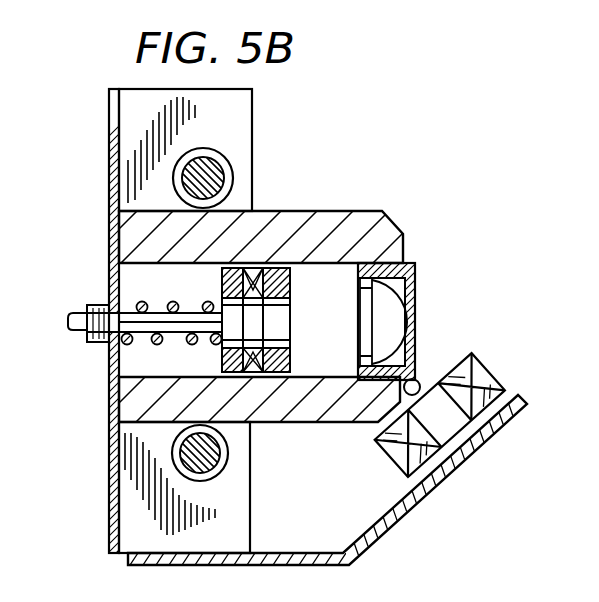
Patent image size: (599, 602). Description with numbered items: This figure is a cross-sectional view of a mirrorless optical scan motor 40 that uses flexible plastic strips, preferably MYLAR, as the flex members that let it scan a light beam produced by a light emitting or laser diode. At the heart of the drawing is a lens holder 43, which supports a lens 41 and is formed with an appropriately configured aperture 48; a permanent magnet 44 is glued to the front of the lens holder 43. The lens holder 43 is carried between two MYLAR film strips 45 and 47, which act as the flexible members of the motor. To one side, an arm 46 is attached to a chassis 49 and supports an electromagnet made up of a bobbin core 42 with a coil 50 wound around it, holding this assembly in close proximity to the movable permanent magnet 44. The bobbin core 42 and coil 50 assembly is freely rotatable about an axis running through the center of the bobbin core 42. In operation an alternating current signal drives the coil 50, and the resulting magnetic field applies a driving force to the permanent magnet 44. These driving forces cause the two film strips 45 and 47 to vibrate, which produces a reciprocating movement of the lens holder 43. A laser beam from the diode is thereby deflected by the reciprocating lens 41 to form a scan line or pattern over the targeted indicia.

The optical scan motor 40 is at (291, 140).
The lens 41 is at (422, 275).
The bobbin core 42 is at (455, 403).
The lens holder 43 is at (412, 268).
The permanent magnet 44 is at (422, 376).
The MYLAR film strip 45 is at (350, 211).
The arm 46 is at (443, 477).
The MYLAR film strip 47 is at (362, 423).
The aperture 48 is at (388, 303).
The chassis 49 is at (109, 117).
The coil 50 is at (487, 378).